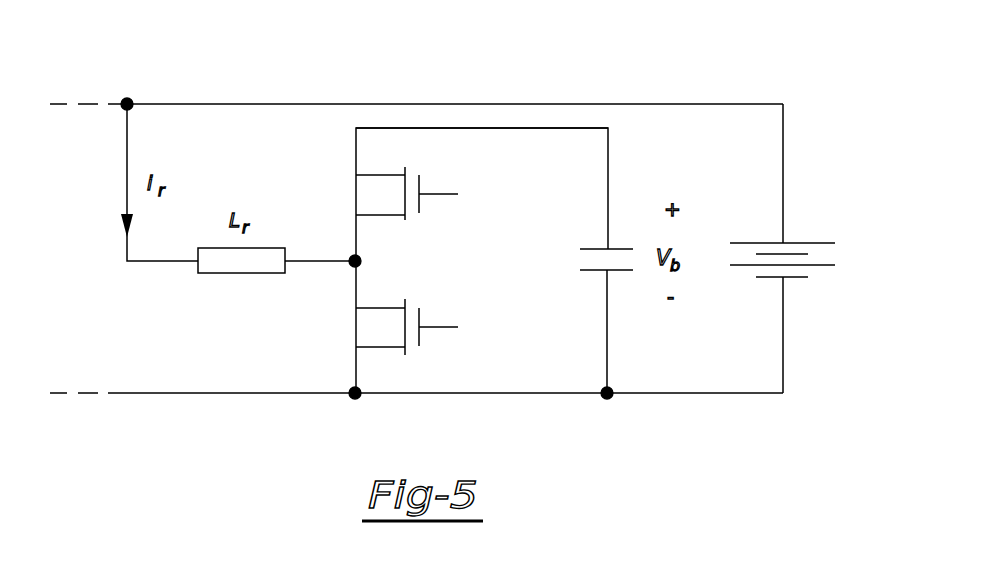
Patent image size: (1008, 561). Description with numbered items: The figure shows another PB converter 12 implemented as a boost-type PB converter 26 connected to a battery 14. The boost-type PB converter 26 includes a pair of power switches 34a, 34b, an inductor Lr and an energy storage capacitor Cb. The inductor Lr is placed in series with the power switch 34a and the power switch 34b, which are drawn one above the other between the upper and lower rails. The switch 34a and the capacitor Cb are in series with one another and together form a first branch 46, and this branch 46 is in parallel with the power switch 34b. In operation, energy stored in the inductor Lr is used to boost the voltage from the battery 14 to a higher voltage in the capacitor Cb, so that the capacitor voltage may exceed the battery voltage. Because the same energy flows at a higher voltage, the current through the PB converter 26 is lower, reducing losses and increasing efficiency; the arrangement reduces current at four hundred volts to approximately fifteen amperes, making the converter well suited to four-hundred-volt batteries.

The PB converter 12 is at (753, 104).
The battery 14 is at (823, 243).
The boost-type PB converter 26 is at (587, 104).
The power switch 34a is at (412, 207).
The power switch 34b is at (412, 338).
The first branch 46 is at (576, 216).